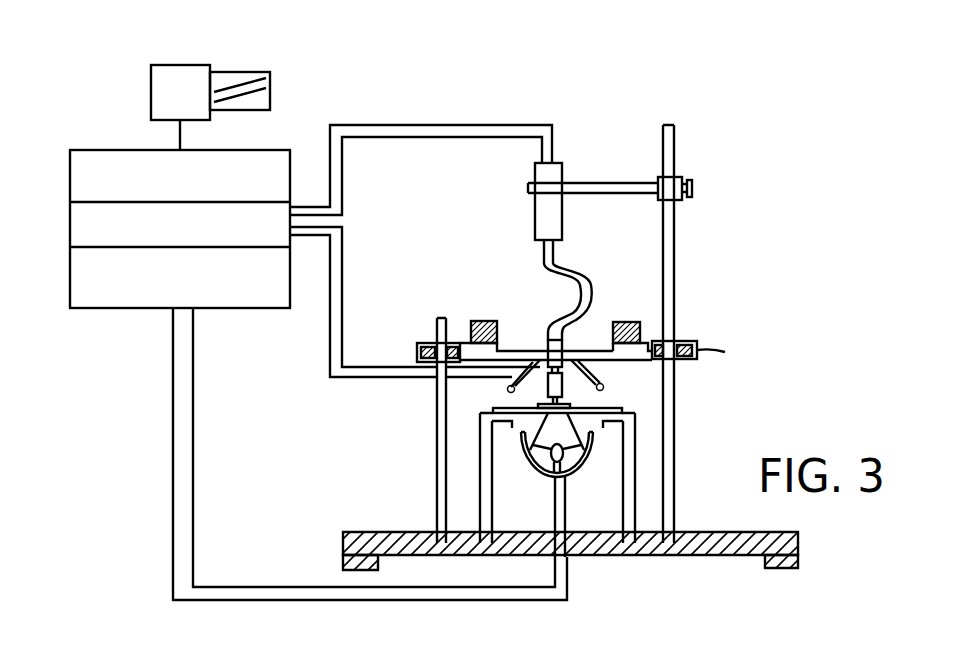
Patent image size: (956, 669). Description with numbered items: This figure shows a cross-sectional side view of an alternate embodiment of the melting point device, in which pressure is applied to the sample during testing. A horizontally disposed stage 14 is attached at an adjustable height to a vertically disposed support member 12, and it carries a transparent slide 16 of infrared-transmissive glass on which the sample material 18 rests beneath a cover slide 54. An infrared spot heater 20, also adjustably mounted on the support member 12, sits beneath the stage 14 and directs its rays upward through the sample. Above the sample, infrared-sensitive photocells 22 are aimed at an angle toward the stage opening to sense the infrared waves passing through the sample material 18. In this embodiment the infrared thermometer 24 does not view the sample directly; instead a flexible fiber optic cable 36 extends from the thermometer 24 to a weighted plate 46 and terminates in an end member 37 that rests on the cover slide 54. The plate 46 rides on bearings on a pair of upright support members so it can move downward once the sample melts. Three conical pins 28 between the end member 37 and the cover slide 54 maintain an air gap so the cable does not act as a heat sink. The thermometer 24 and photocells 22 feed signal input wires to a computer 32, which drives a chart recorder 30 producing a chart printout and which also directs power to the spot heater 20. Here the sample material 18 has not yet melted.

The support member 12 is at (670, 230).
The stage 14 is at (628, 450).
The transparent slide 16 is at (617, 407).
The sample material 18 is at (602, 384).
The infrared spot heater 20 is at (567, 483).
The infrared-sensitive photocells 22 is at (593, 358).
The infrared thermometer 24 is at (542, 210).
The conical pins 28 is at (508, 388).
The chart recorder 30 is at (247, 75).
The computer 32 is at (72, 152).
The flexible fiber optic cable 36 is at (580, 283).
The end member 37 is at (545, 340).
The plate 46 is at (645, 348).
The cover slide 54 is at (524, 428).